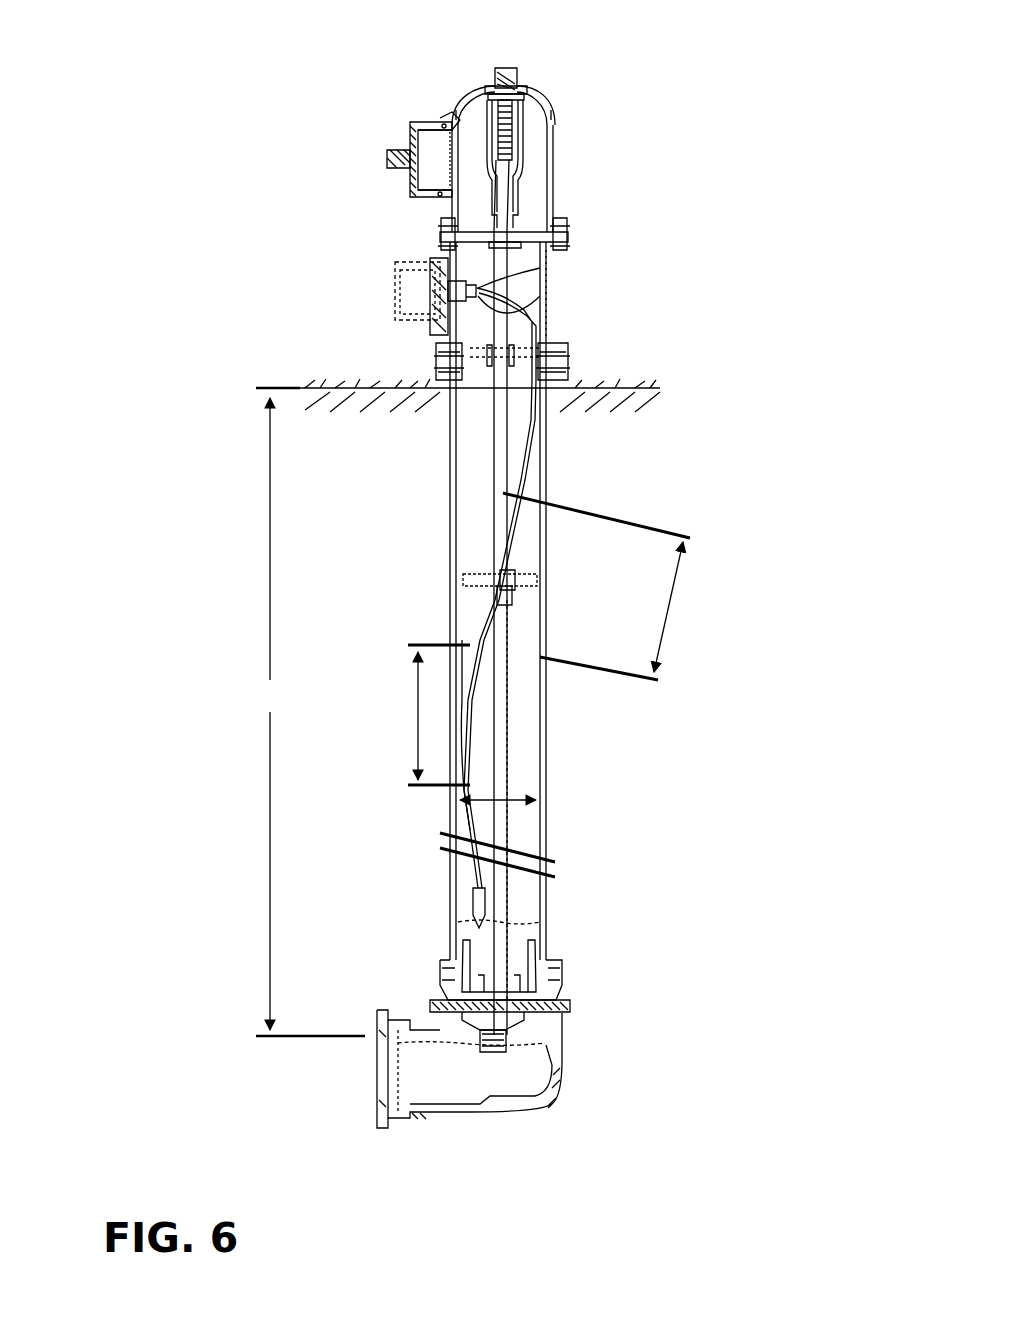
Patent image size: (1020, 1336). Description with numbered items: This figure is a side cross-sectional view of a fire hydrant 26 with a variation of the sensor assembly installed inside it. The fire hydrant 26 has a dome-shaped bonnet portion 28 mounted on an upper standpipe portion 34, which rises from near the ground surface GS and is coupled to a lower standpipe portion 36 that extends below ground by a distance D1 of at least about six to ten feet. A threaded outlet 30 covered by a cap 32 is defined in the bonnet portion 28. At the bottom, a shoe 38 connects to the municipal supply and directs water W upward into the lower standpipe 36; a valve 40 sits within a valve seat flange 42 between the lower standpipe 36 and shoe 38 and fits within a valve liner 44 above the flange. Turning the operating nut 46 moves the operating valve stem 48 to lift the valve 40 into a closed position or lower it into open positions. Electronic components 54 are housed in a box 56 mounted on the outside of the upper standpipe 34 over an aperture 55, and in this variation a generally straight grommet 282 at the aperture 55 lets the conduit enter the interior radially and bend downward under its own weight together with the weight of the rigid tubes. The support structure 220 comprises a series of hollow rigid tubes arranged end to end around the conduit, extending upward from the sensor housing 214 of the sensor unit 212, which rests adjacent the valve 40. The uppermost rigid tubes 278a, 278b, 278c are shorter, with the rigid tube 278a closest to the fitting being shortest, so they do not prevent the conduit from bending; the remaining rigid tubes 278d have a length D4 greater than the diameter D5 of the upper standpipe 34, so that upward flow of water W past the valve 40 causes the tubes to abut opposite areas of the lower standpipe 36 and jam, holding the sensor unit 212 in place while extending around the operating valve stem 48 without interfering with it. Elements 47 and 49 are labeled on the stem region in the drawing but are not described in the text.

The fire hydrant 26 is at (592, 238).
The bonnet portion 28 is at (555, 112).
The operating nut 46 is at (503, 68).
The aperture 55 is at (480, 283).
The threaded outlet 30 is at (432, 165).
The cap 32 is at (410, 140).
The upper standpipe portion 34 is at (548, 263).
The electronic components 54 is at (422, 293).
The box 56 is at (420, 300).
The rigid tube 278a is at (548, 275).
The grommet 282 is at (548, 305).
The rigid tube 278b is at (548, 331).
The rigid tube 278c is at (548, 425).
The rigid tubes 278d is at (482, 614).
The support structure 220 is at (518, 532).
The stem coupling 47 is at (466, 578).
The coupling block 49 is at (512, 600).
The operating valve stem 48 is at (502, 665).
The lower standpipe portion 36 is at (548, 462).
The sensor unit 212 is at (468, 336).
The sensor housing 214 is at (490, 920).
The valve 40 is at (556, 982).
The valve liner 44 is at (552, 1005).
The valve seat flange 42 is at (522, 1030).
The shoe 38 is at (562, 1085).
The ground surface GS is at (330, 386).
The distance D1 is at (310, 712).
The length D4 is at (665, 612).
The diameter D5 is at (540, 800).
The water W is at (436, 1090).